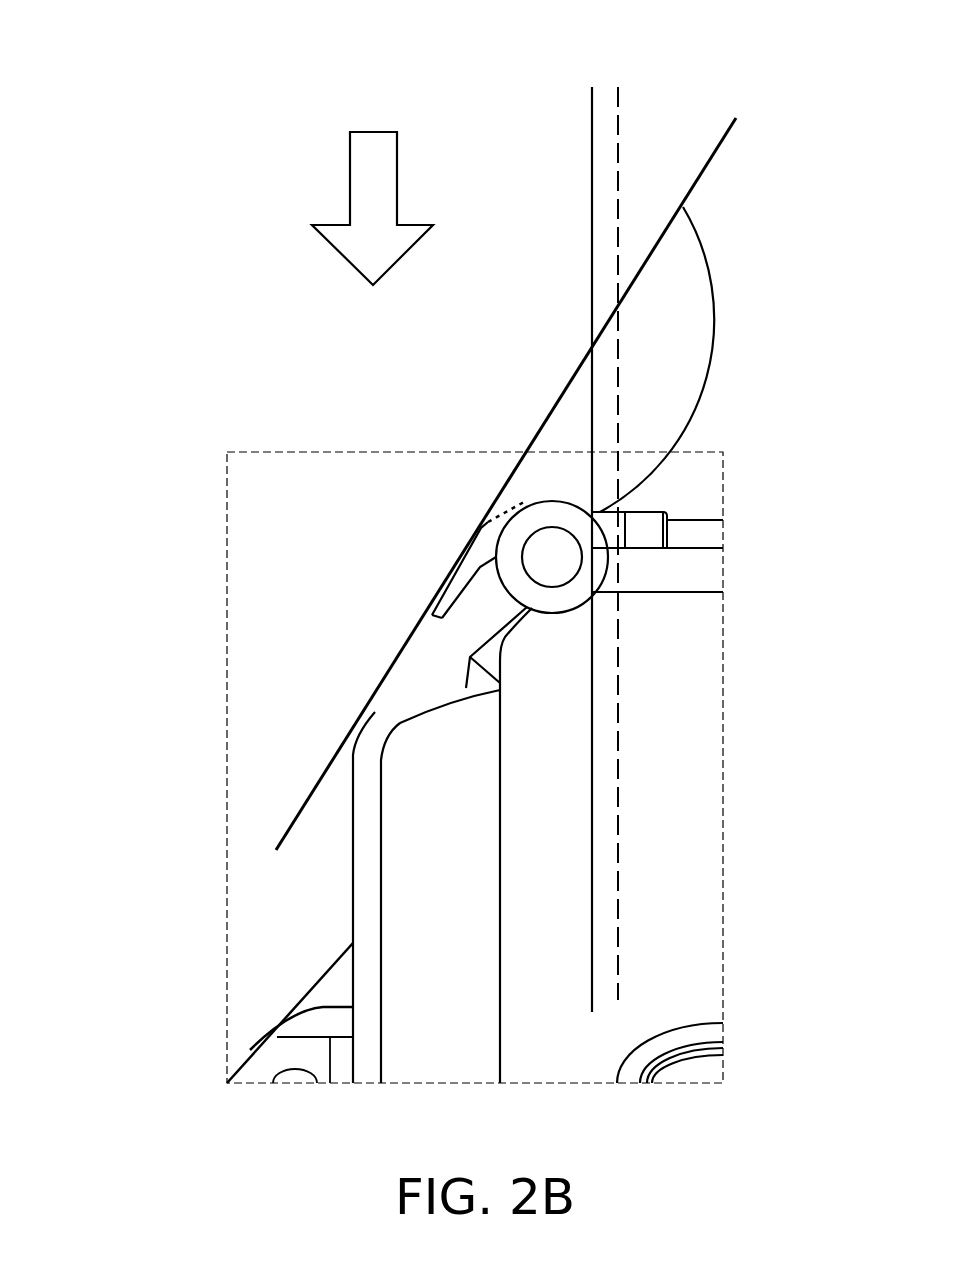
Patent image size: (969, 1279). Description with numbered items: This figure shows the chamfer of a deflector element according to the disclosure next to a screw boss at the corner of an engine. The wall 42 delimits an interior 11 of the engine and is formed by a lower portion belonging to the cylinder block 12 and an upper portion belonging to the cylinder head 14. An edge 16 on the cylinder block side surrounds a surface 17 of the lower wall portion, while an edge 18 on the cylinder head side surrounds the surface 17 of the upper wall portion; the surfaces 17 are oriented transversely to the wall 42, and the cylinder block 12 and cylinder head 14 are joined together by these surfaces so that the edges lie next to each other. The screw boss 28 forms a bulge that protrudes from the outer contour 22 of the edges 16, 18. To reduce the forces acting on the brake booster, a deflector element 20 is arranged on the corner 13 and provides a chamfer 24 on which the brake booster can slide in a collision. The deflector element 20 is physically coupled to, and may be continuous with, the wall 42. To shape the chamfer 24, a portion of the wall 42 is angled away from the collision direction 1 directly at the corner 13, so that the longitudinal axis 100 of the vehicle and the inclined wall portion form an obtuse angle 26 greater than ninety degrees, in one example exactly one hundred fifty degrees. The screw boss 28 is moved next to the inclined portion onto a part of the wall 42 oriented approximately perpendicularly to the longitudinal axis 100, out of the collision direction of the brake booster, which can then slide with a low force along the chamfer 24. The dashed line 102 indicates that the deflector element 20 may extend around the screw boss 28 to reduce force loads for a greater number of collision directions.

The collision direction 1 is at (590, 176).
The longitudinal axis 100 is at (618, 117).
The cylinder block 12 is at (393, 649).
The cylinder head 14 is at (208, 364).
The interior 11 is at (417, 945).
The corner 13 is at (423, 657).
The edge on the cylinder block side 16 is at (238, 1000).
The edge on the cylinder head side 18 is at (367, 983).
The surface 17 is at (677, 568).
The deflector element 20 is at (369, 503).
The outer contour 22 is at (483, 610).
The chamfer 24 is at (342, 746).
The obtuse angle 26 is at (670, 330).
The screw boss 28 is at (560, 517).
The wall 42 is at (367, 1017).
The dashed line 102 is at (510, 503).